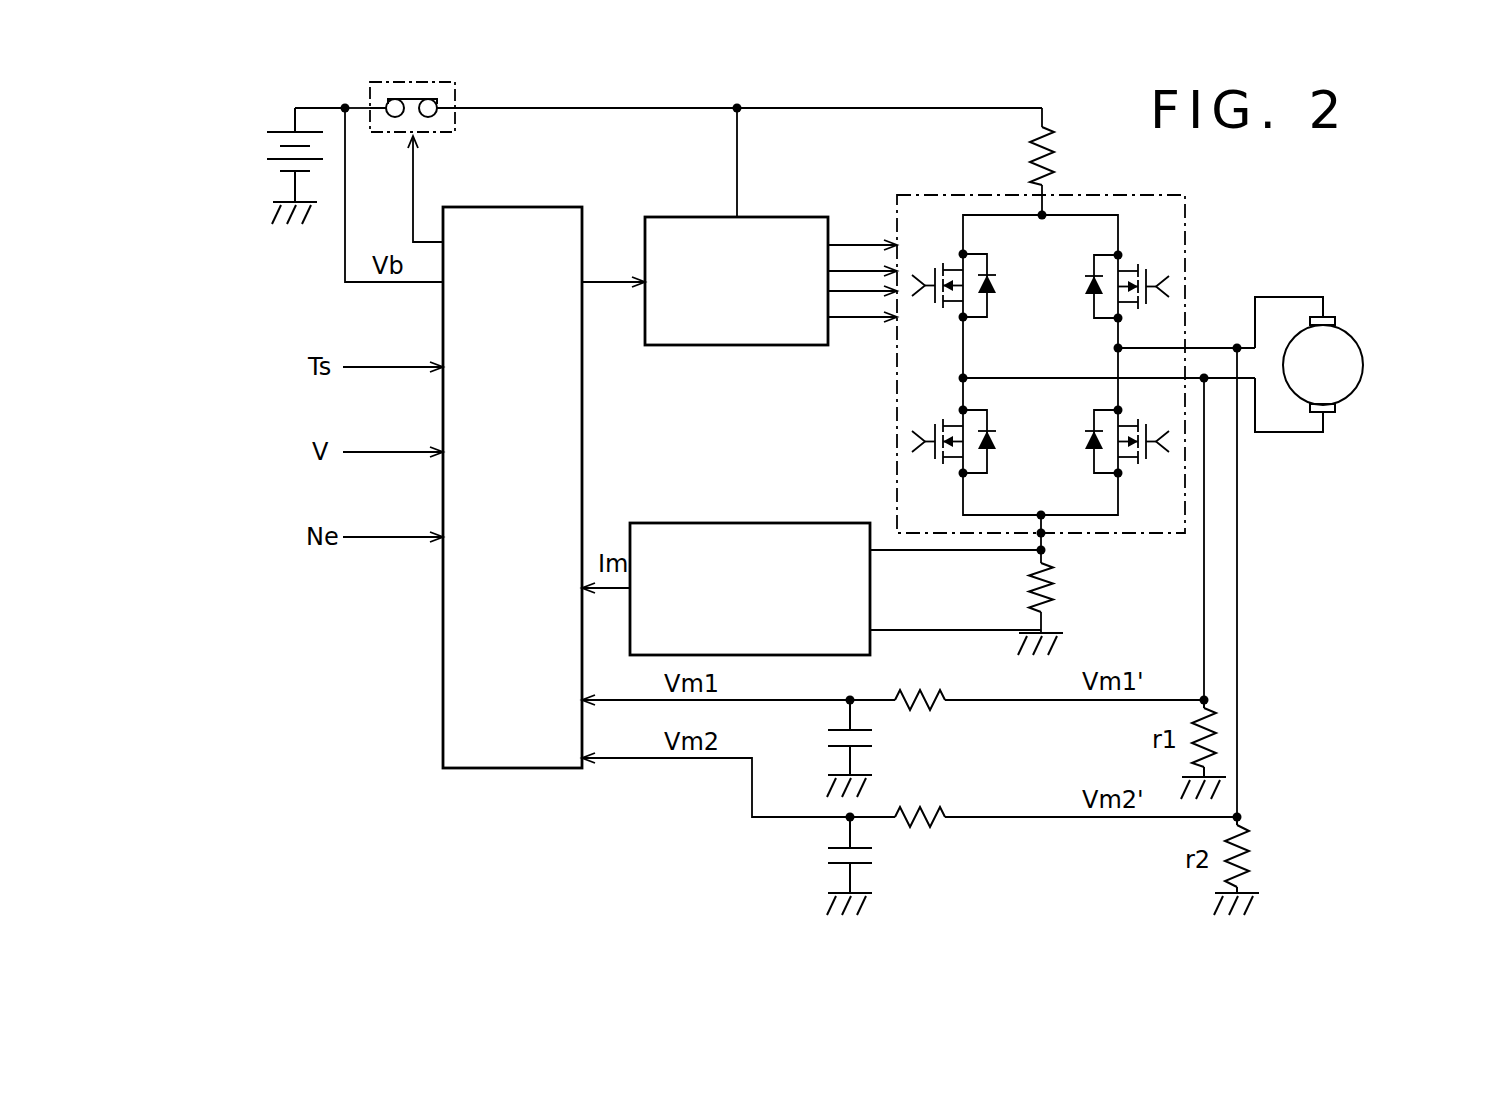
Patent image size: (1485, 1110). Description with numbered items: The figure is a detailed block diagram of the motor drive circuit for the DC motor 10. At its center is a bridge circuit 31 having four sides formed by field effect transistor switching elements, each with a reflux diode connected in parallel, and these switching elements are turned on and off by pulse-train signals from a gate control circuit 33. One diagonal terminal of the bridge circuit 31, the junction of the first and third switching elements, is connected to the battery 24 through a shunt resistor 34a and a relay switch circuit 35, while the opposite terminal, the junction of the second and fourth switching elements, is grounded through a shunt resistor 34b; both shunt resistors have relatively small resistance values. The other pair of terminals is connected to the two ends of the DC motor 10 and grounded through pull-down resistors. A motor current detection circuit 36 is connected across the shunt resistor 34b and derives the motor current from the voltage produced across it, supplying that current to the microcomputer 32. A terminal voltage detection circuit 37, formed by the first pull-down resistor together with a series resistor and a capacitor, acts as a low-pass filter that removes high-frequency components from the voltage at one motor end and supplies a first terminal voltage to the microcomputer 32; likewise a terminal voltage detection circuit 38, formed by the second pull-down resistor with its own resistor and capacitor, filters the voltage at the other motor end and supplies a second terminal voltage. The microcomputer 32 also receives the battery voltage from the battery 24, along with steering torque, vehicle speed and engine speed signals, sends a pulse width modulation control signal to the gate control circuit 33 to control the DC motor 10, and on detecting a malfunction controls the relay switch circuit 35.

The DC motor 10 is at (1356, 382).
The battery 24 is at (283, 131).
The bridge circuit 31 is at (1187, 240).
The microcomputer 32 is at (582, 455).
The gate control circuit 33 is at (774, 216).
The shunt resistor 34a is at (1069, 156).
The shunt resistor 34b is at (1064, 585).
The relay switch circuit 35 is at (455, 136).
The motor current detection circuit 36 is at (773, 522).
The terminal voltage detection circuit 37 is at (957, 748).
The terminal voltage detection circuit 38 is at (957, 860).